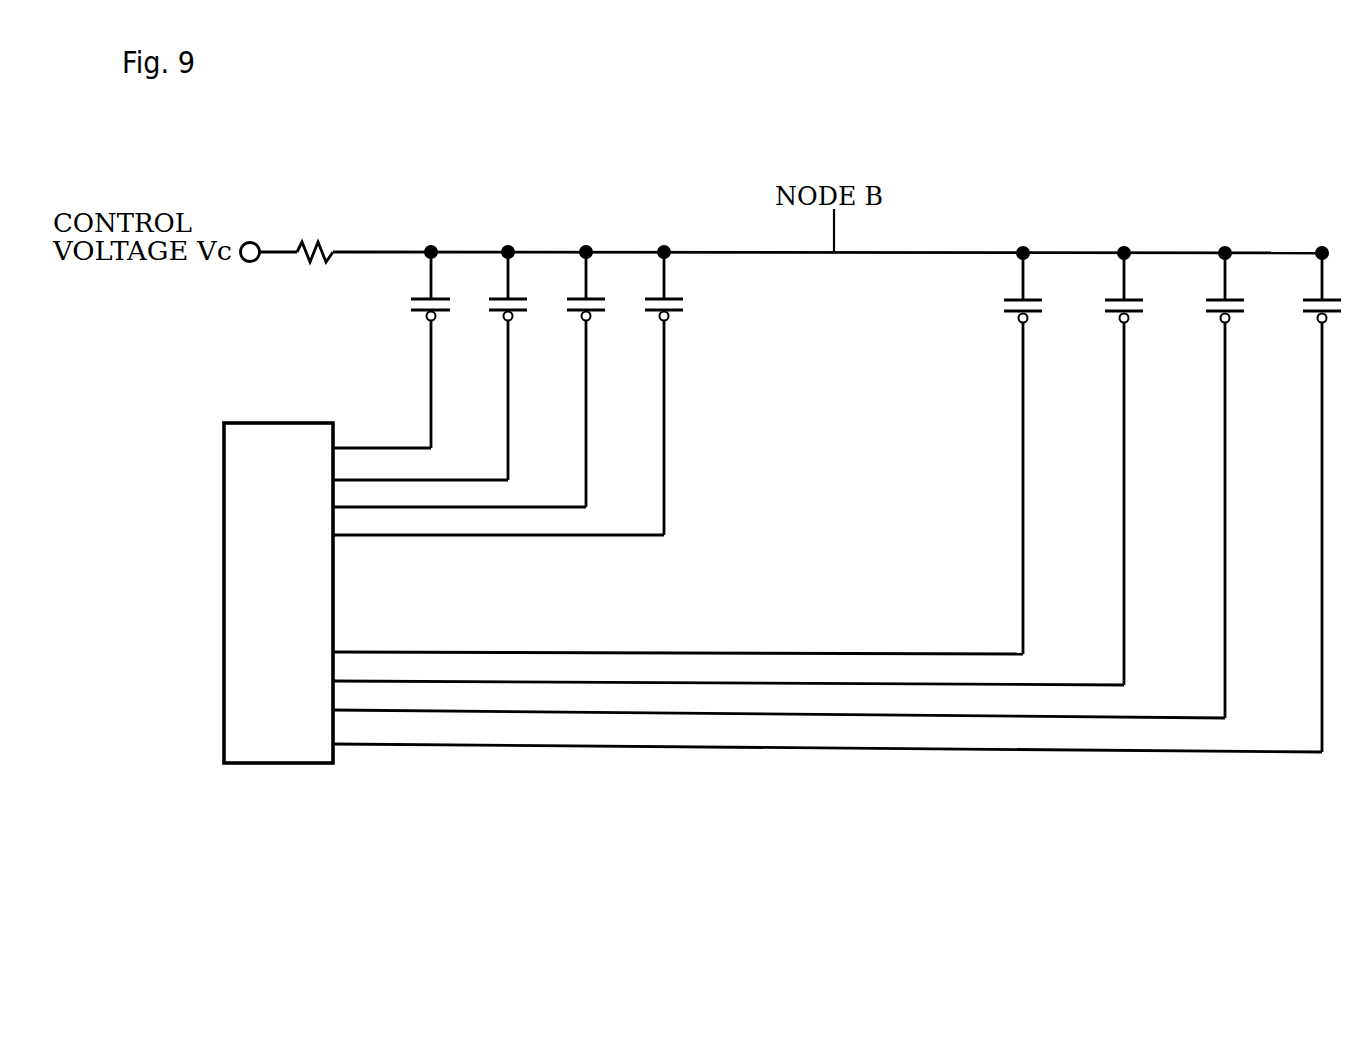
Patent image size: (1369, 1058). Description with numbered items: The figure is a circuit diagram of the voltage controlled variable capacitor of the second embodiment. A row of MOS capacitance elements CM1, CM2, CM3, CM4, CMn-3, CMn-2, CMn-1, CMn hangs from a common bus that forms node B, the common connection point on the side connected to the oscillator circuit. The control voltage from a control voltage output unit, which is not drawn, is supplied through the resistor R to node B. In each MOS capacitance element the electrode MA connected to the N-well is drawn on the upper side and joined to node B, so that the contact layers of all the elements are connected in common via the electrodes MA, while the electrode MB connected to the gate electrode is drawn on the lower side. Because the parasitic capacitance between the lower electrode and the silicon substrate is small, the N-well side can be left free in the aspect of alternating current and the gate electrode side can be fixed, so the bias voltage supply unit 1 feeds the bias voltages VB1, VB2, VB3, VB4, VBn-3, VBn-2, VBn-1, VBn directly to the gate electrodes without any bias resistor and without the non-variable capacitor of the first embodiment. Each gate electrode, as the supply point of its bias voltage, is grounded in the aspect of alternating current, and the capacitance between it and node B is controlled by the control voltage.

The resistor R is at (330, 247).
The electrode MA is at (412, 298).
The electrode MB is at (428, 318).
The bias voltage supply unit 1 is at (278, 764).
The MOS capacitance element CM1 is at (384, 350).
The MOS capacitance element CM2 is at (487, 366).
The MOS capacitance element CM3 is at (565, 379).
The MOS capacitance element CM4 is at (643, 393).
The MOS capacitance element CMn-3 is at (987, 453).
The MOS capacitance element CMn-2 is at (1088, 469).
The MOS capacitance element CMn-1 is at (1190, 485).
The MOS capacitance element CMn is at (1299, 502).
The bias voltage VB1 is at (382, 435).
The bias voltage VB2 is at (420, 465).
The bias voltage VB3 is at (459, 492).
The bias voltage VB4 is at (498, 520).
The bias voltage VBn-3 is at (678, 640).
The bias voltage VBn-2 is at (728, 672).
The bias voltage VBn-1 is at (779, 703).
The bias voltage VBn is at (827, 737).